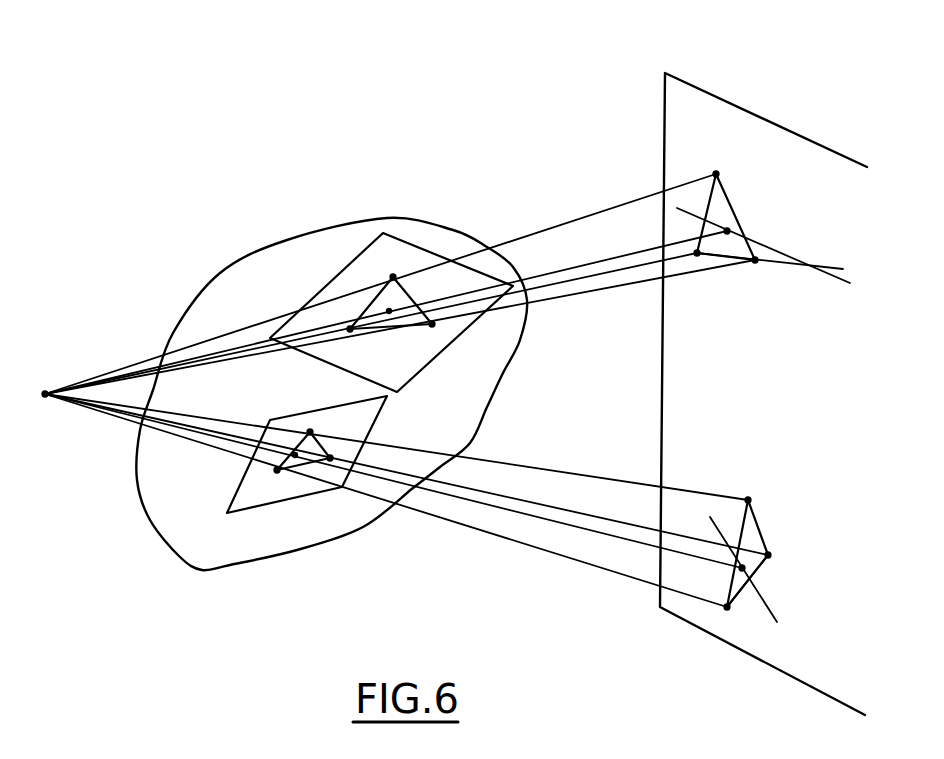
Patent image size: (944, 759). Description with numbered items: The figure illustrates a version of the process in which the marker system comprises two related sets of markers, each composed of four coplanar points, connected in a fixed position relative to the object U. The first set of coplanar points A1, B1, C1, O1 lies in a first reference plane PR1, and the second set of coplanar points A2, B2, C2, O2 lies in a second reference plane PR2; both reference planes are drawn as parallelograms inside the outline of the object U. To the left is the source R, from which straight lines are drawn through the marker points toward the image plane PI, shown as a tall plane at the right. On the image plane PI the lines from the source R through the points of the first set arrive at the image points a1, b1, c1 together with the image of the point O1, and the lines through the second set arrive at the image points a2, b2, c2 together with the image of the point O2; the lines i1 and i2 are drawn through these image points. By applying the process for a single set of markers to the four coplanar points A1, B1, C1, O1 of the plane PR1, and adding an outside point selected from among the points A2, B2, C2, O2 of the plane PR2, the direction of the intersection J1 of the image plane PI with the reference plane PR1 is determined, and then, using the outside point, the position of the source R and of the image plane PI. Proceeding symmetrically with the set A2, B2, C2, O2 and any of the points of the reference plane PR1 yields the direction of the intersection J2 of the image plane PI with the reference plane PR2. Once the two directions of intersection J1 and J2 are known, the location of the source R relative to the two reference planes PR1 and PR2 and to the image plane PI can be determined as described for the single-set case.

The source R is at (47, 411).
The object U is at (236, 572).
The reference plane PR1 is at (277, 330).
The reference plane PR2 is at (224, 509).
The image plane PI is at (692, 78).
The coplanar point A1 is at (394, 266).
The coplanar point B1 is at (432, 336).
The coplanar point C1 is at (353, 342).
The coplanar point O1 is at (390, 310).
The coplanar point A2 is at (319, 424).
The coplanar point B2 is at (340, 455).
The coplanar point C2 is at (273, 484).
The coplanar point O2 is at (295, 454).
The projected vertex a1 on image plane a1 is at (723, 165).
The projected vertex b1 on image plane b1 is at (763, 278).
The projected vertex c1 on image plane c1 is at (697, 256).
The projected line i1 on image plane i1 is at (770, 255).
The direction of intersection J1 is at (763, 257).
The projected vertex a2 on image plane a2 is at (755, 490).
The projected vertex b2 on image plane b2 is at (783, 555).
The projected vertex c2 on image plane c2 is at (727, 621).
The projected line i2 on image plane i2 is at (749, 581).
The direction of intersection J2 is at (755, 575).